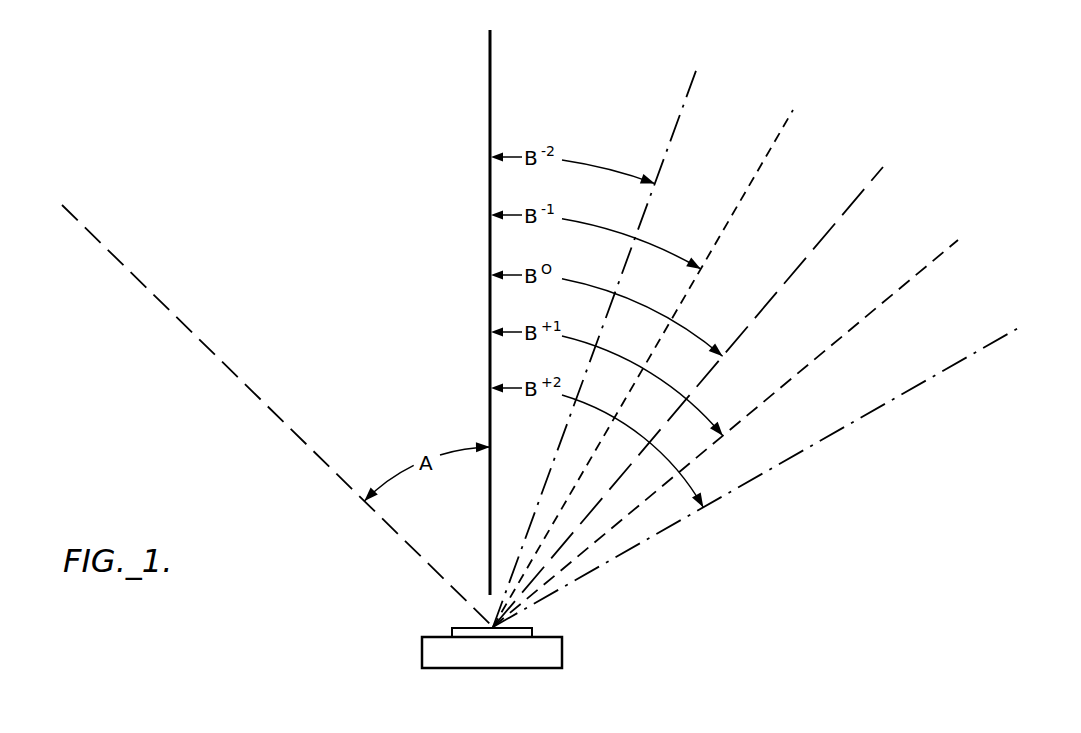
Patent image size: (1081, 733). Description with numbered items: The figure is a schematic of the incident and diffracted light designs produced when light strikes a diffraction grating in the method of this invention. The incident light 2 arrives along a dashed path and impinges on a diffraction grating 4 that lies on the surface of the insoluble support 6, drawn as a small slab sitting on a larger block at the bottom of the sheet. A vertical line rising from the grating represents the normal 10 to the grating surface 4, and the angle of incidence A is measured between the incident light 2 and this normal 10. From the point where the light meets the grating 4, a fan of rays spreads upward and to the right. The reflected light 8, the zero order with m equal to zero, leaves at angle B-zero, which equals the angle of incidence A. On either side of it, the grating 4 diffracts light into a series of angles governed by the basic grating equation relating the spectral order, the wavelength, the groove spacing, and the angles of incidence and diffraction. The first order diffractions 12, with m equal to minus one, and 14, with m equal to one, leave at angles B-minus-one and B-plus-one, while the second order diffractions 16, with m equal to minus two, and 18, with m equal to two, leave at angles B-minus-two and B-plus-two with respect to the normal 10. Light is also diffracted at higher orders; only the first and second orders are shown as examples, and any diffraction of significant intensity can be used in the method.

The incident light 2 is at (108, 248).
The diffraction grating 4 is at (458, 627).
The insoluble support 6 is at (422, 652).
The reflected light 8 is at (843, 212).
The normal 10 is at (489, 88).
The first order diffraction 12 is at (766, 162).
The first order diffraction 14 is at (908, 280).
The second order diffraction 16 is at (677, 122).
The second order diffraction 18 is at (973, 352).